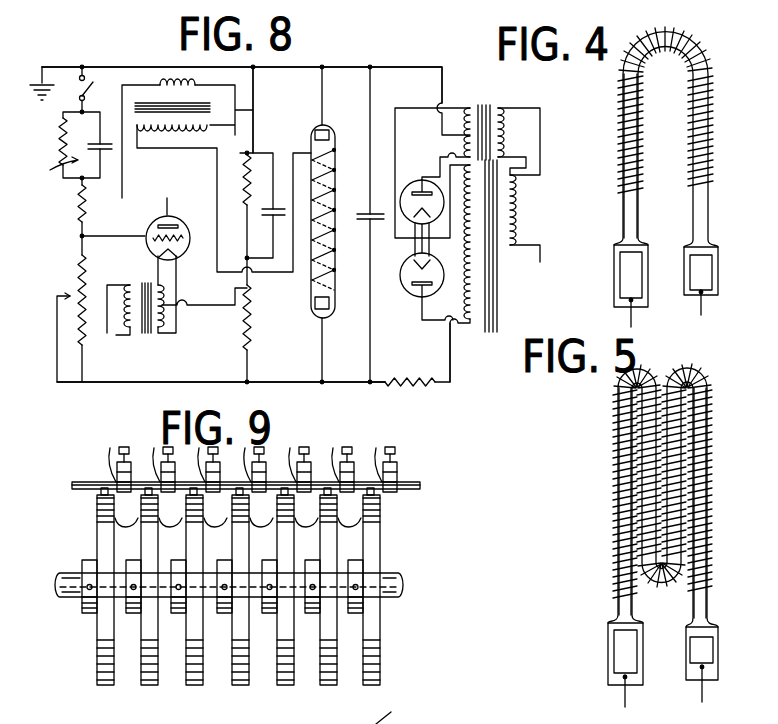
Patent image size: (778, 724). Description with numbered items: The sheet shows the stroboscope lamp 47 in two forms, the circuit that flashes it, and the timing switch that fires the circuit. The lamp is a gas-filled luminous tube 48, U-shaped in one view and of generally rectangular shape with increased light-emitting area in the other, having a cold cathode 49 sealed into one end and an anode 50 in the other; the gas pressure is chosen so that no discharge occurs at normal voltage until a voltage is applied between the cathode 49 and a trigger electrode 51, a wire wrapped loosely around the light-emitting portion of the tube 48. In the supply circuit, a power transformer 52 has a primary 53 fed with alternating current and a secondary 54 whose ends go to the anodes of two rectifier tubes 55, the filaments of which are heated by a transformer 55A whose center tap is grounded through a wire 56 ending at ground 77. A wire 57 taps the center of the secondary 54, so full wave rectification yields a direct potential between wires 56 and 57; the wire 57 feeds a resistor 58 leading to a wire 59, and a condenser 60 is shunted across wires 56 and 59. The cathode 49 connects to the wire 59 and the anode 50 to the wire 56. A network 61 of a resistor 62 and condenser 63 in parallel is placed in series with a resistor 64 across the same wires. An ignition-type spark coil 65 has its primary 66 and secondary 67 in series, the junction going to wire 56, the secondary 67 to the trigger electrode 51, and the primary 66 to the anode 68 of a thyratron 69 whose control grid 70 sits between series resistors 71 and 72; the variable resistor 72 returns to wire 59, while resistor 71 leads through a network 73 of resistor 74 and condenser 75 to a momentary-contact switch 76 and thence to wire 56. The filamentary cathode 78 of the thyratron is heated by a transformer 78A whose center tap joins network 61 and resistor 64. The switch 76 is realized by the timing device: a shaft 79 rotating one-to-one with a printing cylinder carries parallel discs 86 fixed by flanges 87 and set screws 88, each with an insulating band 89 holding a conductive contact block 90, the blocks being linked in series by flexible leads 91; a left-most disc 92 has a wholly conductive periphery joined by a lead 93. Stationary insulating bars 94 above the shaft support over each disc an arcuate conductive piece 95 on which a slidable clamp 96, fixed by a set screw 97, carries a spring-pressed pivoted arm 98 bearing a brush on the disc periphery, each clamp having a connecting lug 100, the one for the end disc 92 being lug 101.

In FIG. 8, the stroboscope lamp 47 is at (340, 153).
In FIG. 4, the stroboscope lamp 47 is at (720, 118).
In FIG. 5, the stroboscope lamp 47 is at (722, 410).
In FIG. 4, the luminous tube 48 is at (624, 106).
In FIG. 5, the luminous tube 48 is at (620, 474).
In FIG. 8, the cold cathode 49 is at (331, 306).
In FIG. 4, the cold cathode 49 is at (633, 265).
In FIG. 5, the cold cathode 49 is at (622, 648).
In FIG. 8, the anode 50 is at (334, 134).
In FIG. 4, the anode 50 is at (710, 272).
In FIG. 5, the anode 50 is at (712, 650).
In FIG. 8, the trigger electrode 51 is at (336, 230).
In FIG. 4, the trigger electrode 51 is at (660, 54).
In FIG. 5, the trigger electrode 51 is at (712, 438).
In FIG. 8, the power transformer 52 is at (496, 339).
In FIG. 8, the primary 53 is at (522, 212).
In FIG. 8, the secondary 54 is at (477, 176).
In FIG. 8, the rectifier tubes 55 is at (422, 180).
In FIG. 8, the filament transformer 55A is at (495, 109).
In FIG. 8, the wire 56 is at (156, 67).
In FIG. 8, the wire 57 is at (452, 352).
In FIG. 8, the resistor 58 is at (416, 381).
In FIG. 8, the wire 59 is at (98, 382).
In FIG. 8, the condenser 60 is at (370, 225).
In FIG. 8, the network 61 is at (265, 164).
In FIG. 8, the resistor 62 is at (244, 192).
In FIG. 8, the condenser 63 is at (272, 220).
In FIG. 8, the resistor 64 is at (253, 322).
In FIG. 8, the spark coil 65 is at (221, 104).
In FIG. 8, the primary 66 is at (187, 90).
In FIG. 8, the secondary 67 is at (165, 132).
In FIG. 8, the anode 68 is at (178, 227).
In FIG. 8, the thyratron 69 is at (158, 228).
In FIG. 8, the control grid 70 is at (187, 240).
In FIG. 8, the resistor 71 is at (79, 208).
In FIG. 8, the variable resistor 72 is at (78, 288).
In FIG. 8, the network 73 is at (53, 166).
In FIG. 8, the resistor 74 is at (61, 134).
In FIG. 8, the condenser 75 is at (100, 143).
In FIG. 8, the switch 76 is at (97, 84).
In FIG. 9, the switch 76 is at (411, 553).
In FIG. 8, the ground 77 is at (42, 72).
In FIG. 8, the filamentary cathode 78 is at (174, 258).
In FIG. 8, the transformer 78A is at (157, 330).
In FIG. 9, the shaft 79 is at (400, 590).
In FIG. 9, the discs 86 is at (245, 686).
In FIG. 9, the flanges 87 is at (92, 614).
In FIG. 9, the set screws 88 is at (86, 600).
In FIG. 9, the bands 89 is at (382, 571).
In FIG. 9, the contact block 90 is at (246, 522).
In FIG. 9, the flexible leads 91 is at (173, 529).
In FIG. 9, the left-most disc 92 is at (108, 687).
In FIG. 9, the left-most flexible lead 93 is at (129, 528).
In FIG. 9, the bars 94 is at (90, 482).
In FIG. 9, the arcuate piece 95 is at (168, 493).
In FIG. 9, the clamp 96 is at (262, 494).
In FIG. 9, the set screw 97 is at (422, 442).
In FIG. 9, the pivoted arm 98 is at (200, 496).
In FIG. 9, the connecting lug 100 is at (306, 494).
In FIG. 9, the connecting lug 101 is at (117, 465).